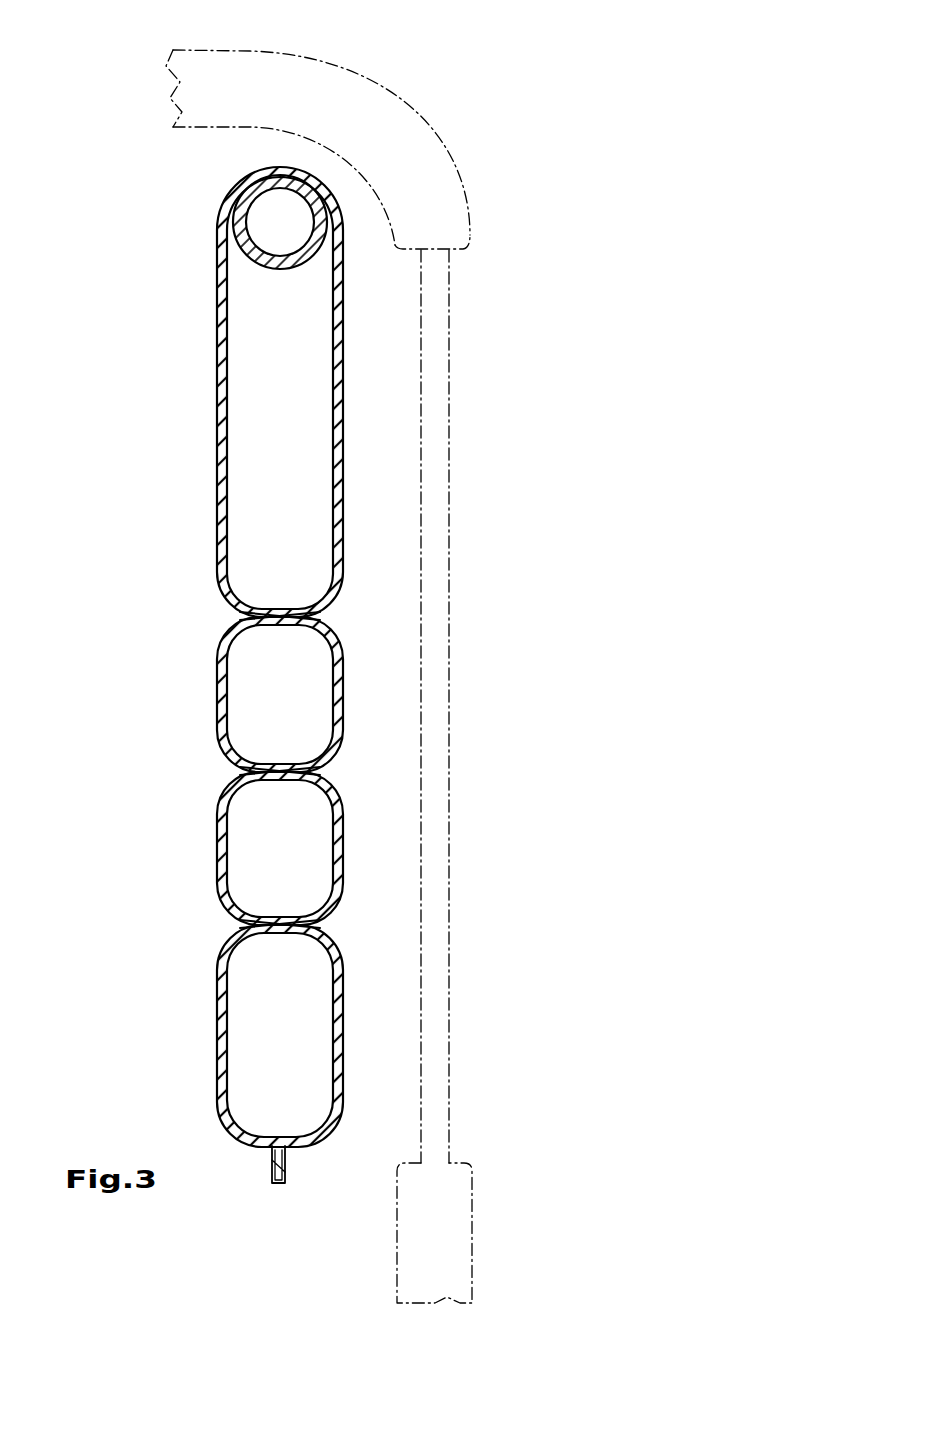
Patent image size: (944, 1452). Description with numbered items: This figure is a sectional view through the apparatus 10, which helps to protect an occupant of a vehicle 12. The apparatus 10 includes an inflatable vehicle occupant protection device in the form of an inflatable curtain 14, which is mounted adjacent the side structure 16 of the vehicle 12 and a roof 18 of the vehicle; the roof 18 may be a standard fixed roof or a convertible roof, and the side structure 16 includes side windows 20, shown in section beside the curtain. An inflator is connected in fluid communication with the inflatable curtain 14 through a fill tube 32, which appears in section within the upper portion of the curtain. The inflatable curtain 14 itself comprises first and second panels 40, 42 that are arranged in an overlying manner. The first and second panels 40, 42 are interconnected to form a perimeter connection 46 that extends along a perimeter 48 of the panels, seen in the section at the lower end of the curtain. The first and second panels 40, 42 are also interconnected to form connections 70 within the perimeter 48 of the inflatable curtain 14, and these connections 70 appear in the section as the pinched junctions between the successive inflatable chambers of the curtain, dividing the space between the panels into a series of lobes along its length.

The apparatus 10 is at (123, 260).
The vehicle 12 is at (467, 123).
The inflatable curtain 14 is at (220, 332).
The side structure 16 is at (455, 230).
The roof 18 is at (303, 92).
The side windows 20 is at (433, 810).
The fill tube 32 is at (243, 222).
The first panel 40 is at (344, 532).
The second panel 42 is at (217, 528).
The perimeter connection 46 is at (268, 1168).
The perimeter 48 is at (275, 1185).
The connections 70 is at (262, 620).